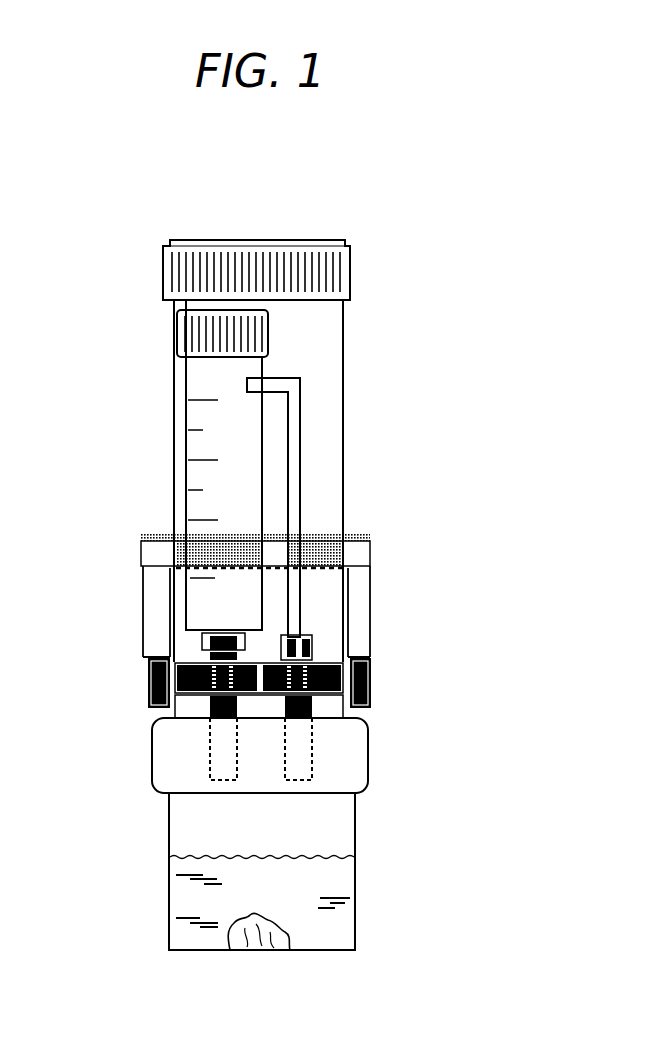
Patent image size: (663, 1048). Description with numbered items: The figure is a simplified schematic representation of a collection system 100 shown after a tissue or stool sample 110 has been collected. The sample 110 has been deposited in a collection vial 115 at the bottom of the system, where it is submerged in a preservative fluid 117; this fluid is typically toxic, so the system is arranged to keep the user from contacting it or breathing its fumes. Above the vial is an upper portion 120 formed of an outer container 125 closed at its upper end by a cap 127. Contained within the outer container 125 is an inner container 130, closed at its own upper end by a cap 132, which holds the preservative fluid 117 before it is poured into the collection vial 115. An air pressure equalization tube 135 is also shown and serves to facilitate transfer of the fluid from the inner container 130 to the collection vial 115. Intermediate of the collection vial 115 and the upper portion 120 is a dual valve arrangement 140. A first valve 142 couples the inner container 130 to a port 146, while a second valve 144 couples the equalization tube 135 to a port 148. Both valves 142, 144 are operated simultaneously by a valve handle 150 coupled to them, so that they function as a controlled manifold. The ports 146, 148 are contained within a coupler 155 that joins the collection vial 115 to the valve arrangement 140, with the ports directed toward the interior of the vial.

The collection system 100 is at (292, 613).
The tissue or stool sample 110 is at (238, 950).
The collection vial 115 is at (169, 820).
The preservative fluid 117 is at (185, 887).
The upper portion 120 is at (291, 439).
The outer container 125 is at (343, 323).
The cap 127 is at (173, 275).
The inner container 130 is at (190, 477).
The cap 132 is at (190, 347).
The air pressure equalization tube 135 is at (300, 420).
The dual valve arrangement 140 is at (295, 669).
The first valve 142 is at (205, 677).
The second valve 144 is at (315, 681).
The port 146 is at (213, 735).
The port 148 is at (313, 735).
The valve handle 150 is at (158, 602).
The coupler 155 is at (350, 772).